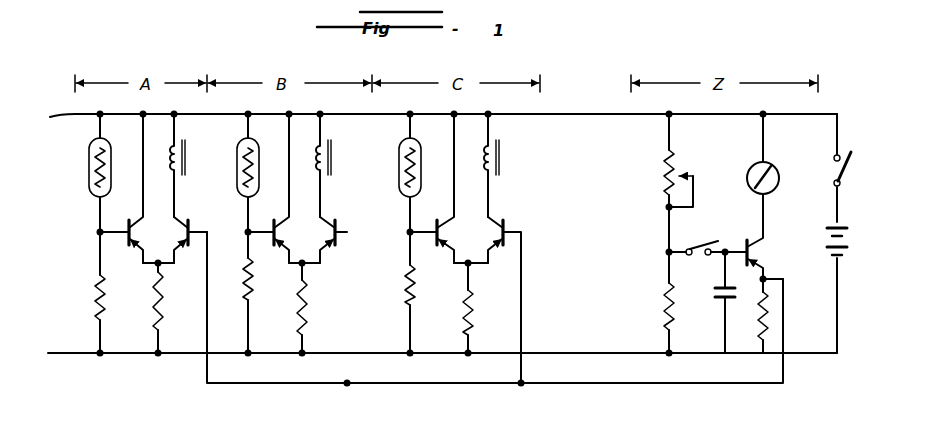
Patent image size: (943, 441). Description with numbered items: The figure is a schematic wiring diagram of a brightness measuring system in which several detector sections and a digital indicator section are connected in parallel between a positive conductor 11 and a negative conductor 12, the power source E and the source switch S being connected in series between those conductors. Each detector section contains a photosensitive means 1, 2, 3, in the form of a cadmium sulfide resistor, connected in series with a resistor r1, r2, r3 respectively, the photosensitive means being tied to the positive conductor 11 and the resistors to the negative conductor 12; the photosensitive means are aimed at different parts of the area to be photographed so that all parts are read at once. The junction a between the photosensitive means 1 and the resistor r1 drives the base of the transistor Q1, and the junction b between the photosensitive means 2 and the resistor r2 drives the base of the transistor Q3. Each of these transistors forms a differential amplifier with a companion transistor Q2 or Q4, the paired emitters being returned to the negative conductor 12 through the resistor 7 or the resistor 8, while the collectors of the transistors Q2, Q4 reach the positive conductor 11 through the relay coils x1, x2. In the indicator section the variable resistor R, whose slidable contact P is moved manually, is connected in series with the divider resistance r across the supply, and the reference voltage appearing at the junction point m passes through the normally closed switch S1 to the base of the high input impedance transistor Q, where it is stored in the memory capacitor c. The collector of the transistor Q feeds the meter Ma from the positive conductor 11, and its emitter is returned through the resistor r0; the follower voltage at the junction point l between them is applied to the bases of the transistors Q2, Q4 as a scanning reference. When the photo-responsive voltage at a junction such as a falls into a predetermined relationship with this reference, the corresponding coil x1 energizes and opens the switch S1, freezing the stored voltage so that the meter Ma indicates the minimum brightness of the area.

The photosensitive means 1 is at (90, 180).
The photosensitive means 2 is at (236, 148).
The photosensitive means 3 is at (400, 182).
The resistor 7 is at (163, 310).
The resistor 8 is at (306, 312).
The positive conductor 11 is at (577, 115).
The negative conductor 12 is at (588, 353).
The junction a is at (100, 236).
The junction b is at (248, 232).
The resistor r1 is at (98, 298).
The resistor r2 is at (251, 286).
The resistor r3 is at (406, 292).
The transistor Q1 is at (134, 256).
The transistor Q2 is at (180, 256).
The transistor Q3 is at (280, 254).
The transistor Q4 is at (332, 222).
The electromagnetic coil x1 is at (190, 172).
The electromagnetic coil x2 is at (334, 154).
The variable resistor R is at (657, 183).
The slidable contact P is at (681, 180).
The junction point m is at (654, 252).
The normally closed switch S1 is at (697, 241).
The divider resistance r is at (667, 306).
The memory capacitor c is at (716, 300).
The transistor Q is at (753, 236).
The junction point l is at (768, 278).
The resistor r0 is at (760, 312).
The meter Ma is at (777, 160).
The source switch S is at (848, 168).
The power source E is at (846, 290).